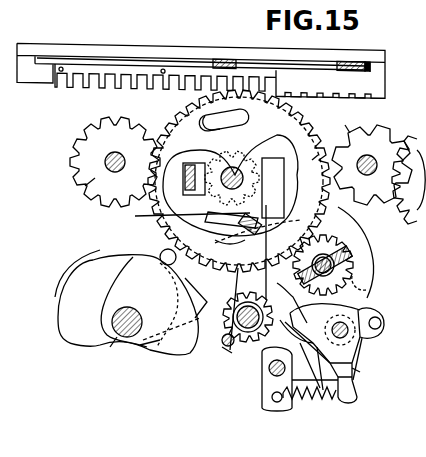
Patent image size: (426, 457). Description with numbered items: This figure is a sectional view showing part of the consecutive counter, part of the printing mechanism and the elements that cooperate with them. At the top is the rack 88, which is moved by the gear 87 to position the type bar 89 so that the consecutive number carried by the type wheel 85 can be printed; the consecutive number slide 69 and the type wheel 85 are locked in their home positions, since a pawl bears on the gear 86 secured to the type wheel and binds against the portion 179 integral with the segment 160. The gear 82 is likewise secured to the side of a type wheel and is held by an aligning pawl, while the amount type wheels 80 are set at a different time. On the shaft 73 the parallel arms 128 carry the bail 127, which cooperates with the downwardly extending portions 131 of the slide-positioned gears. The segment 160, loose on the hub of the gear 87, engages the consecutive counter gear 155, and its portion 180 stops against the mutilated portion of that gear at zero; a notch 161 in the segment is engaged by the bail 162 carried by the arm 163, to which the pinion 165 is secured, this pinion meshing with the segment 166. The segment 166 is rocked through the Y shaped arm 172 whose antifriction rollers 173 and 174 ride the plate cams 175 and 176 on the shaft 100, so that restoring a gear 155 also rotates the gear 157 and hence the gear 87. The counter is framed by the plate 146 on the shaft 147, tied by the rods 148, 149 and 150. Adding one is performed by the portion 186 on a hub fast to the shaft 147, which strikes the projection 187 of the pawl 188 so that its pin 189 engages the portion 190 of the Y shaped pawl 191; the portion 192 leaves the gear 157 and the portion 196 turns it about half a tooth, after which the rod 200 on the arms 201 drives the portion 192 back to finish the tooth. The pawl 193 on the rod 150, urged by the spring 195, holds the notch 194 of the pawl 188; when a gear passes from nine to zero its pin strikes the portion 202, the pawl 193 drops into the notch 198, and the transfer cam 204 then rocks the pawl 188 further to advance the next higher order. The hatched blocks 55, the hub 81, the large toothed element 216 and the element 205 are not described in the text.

The rack 88 is at (138, 80).
The consecutive number slide 69 is at (322, 60).
The stop blocks 55 is at (228, 60).
The type bar 89 is at (378, 77).
The type wheel 85 is at (78, 138).
The shaft 81 is at (105, 162).
The gear 86 is at (95, 178).
The gear 87 is at (315, 117).
The portion 180 is at (300, 122).
The pinion 165 is at (212, 150).
The segment 166 is at (276, 188).
The bail 127 is at (183, 184).
The shaft 73 is at (242, 167).
The portion 179 is at (201, 123).
The arm 128 is at (208, 212).
The downwardly extending portion 131 is at (198, 222).
The arm 163 is at (160, 216).
The bail 162 is at (224, 234).
The notch 161 is at (232, 256).
The gear 82 is at (382, 137).
The amount type wheel 80 is at (378, 122).
The segment 160 is at (314, 160).
The large gear 216 is at (360, 233).
The consecutive counter gear 155 is at (327, 242).
The gear 157 is at (328, 245).
The rod 148 is at (336, 248).
The portion 202 is at (368, 283).
The portion 190 is at (370, 293).
The portion 196 is at (352, 260).
The lever 205 is at (305, 285).
The projection 187 is at (332, 327).
The pin 189 is at (381, 322).
The pawl 188 is at (383, 327).
The stud 149 is at (347, 340).
The portion 186 is at (300, 330).
The pawl 193 is at (305, 367).
The plate 146 is at (268, 370).
The rod 150 is at (271, 383).
The spring 195 is at (312, 399).
The notch 198 is at (345, 377).
The Y shaped pawl 191 is at (350, 355).
The notch 194 is at (352, 368).
The portion 192 is at (250, 300).
The shaft 147 is at (248, 333).
The rod 200 is at (222, 343).
The arm 201 is at (232, 356).
The transfer cam 204 is at (235, 298).
The plate cam 175 is at (60, 325).
The plate cam 176 is at (114, 282).
The shaft 100 is at (117, 335).
The antifriction roller 173 is at (146, 350).
The Y shaped arm 172 is at (191, 353).
The antifriction roller 174 is at (160, 254).